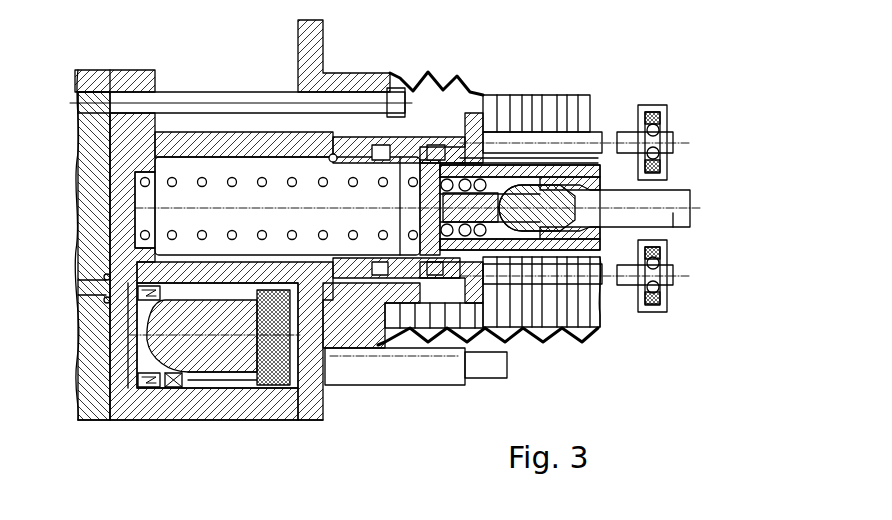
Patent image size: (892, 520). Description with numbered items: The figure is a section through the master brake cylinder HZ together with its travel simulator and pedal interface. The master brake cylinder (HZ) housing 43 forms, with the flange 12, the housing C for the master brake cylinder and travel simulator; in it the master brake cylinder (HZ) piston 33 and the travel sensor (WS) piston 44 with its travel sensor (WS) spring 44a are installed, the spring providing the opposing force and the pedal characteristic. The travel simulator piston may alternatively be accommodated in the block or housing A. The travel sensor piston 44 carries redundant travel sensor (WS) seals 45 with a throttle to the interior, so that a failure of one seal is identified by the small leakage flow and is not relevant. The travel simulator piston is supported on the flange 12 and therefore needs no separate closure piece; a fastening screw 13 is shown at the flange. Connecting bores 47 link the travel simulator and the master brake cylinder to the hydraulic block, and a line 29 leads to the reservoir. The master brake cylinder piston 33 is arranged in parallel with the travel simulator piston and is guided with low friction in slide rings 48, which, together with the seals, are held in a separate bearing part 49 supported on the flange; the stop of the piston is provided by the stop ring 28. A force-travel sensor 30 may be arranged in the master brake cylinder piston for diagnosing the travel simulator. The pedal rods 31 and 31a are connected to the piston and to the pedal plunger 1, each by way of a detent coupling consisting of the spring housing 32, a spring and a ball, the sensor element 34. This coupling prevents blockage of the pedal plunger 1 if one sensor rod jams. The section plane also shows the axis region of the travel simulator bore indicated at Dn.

The pedal plunger 1 is at (672, 198).
The flange of master brake cylinder HZ 12 is at (314, 422).
The fastening screw 13 is at (190, 100).
The stop ring for piston 28 is at (336, 75).
The line to the reservoir VB 29 is at (415, 140).
The force-travel sensor KWS 30 is at (472, 120).
The pedal rod 31 is at (535, 125).
The pedal rod 31a is at (592, 265).
The spring housing 32 is at (648, 104).
The master brake cylinder (HZ) piston 33 is at (662, 118).
The sensor element 34 is at (662, 136).
The master brake cylinder (HZ) housing 43 is at (113, 416).
The travel sensor (WS) piston 44 is at (143, 325).
The travel sensor (WS) spring 44a is at (228, 375).
The travel sensor (WS) seal 45 is at (150, 388).
The connecting bores travel sensor (WS)-master brake cylinder (HZ) and HCU block 47 is at (103, 270).
The slide rings 48 is at (372, 349).
The bearing part 49 is at (422, 338).
The master brake cylinder HZ is at (213, 150).
The nominal diameter Dn is at (108, 365).
The housing for HCU and pressure supply device A is at (78, 405).
The housing for master brake cylinder HZ and travel simulator WS with flange C is at (263, 428).